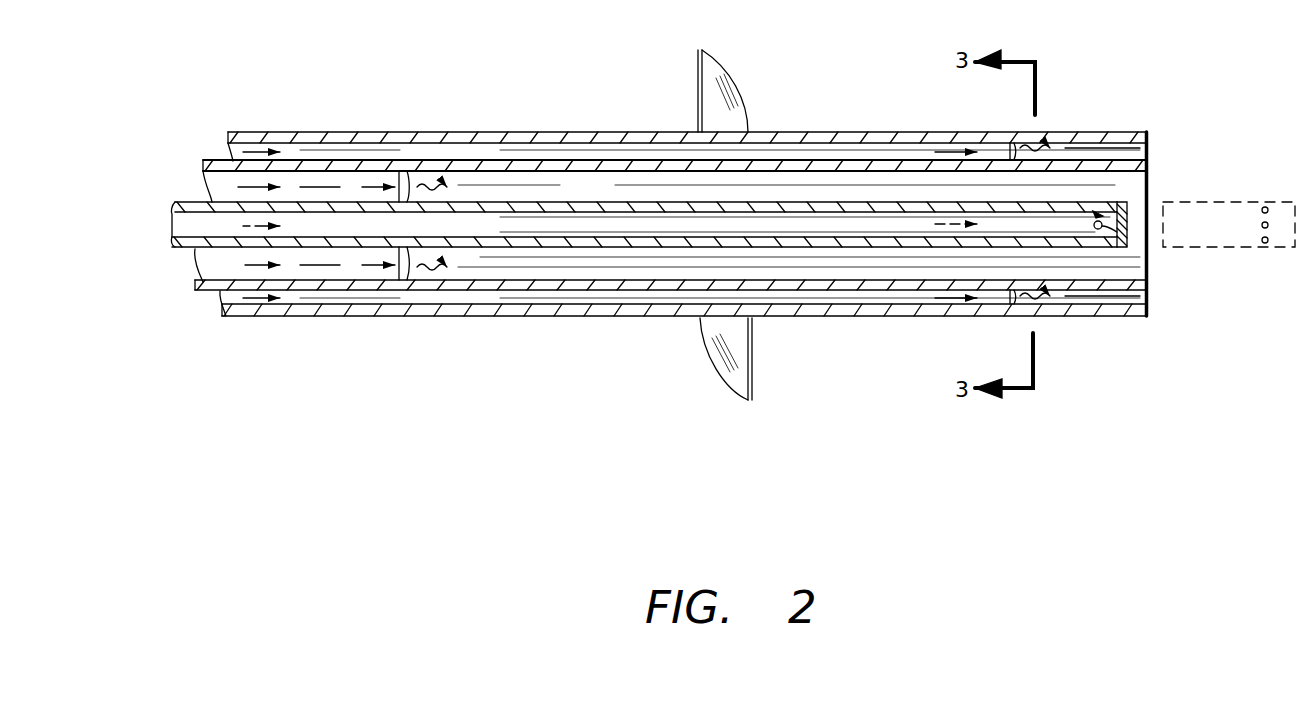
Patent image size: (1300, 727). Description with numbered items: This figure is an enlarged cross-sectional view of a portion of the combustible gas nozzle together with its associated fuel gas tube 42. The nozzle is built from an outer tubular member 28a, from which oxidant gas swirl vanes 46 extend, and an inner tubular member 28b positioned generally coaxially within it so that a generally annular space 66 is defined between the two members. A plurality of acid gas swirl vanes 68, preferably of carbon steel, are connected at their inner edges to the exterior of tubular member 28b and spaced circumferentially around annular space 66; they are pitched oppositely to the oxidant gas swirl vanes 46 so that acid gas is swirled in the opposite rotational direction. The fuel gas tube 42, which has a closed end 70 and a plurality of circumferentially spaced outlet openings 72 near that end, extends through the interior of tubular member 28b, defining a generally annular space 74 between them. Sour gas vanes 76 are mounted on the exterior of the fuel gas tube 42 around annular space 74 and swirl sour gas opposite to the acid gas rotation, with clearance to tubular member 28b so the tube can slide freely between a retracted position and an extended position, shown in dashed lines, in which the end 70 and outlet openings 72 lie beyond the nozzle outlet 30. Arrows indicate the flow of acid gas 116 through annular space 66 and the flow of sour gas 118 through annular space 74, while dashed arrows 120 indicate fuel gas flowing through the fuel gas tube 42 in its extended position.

The nozzle outlet 30 is at (1153, 145).
The tubular member 28a is at (313, 133).
The tubular member 28b is at (353, 161).
The fuel gas tube 42 is at (505, 201).
The oxidant gas swirl vanes 46 is at (713, 70).
The annular space 66 is at (570, 150).
The acid gas swirl vanes 68 is at (1000, 145).
The closed end 70 is at (1127, 200).
The outlet openings 72 is at (1127, 247).
The annular space 74 is at (607, 195).
The sour gas vanes 76 is at (407, 171).
The flow of acid gas 116 is at (260, 133).
The flow of sour gas 118 is at (247, 188).
The flow of fuel gas 120 is at (257, 227).